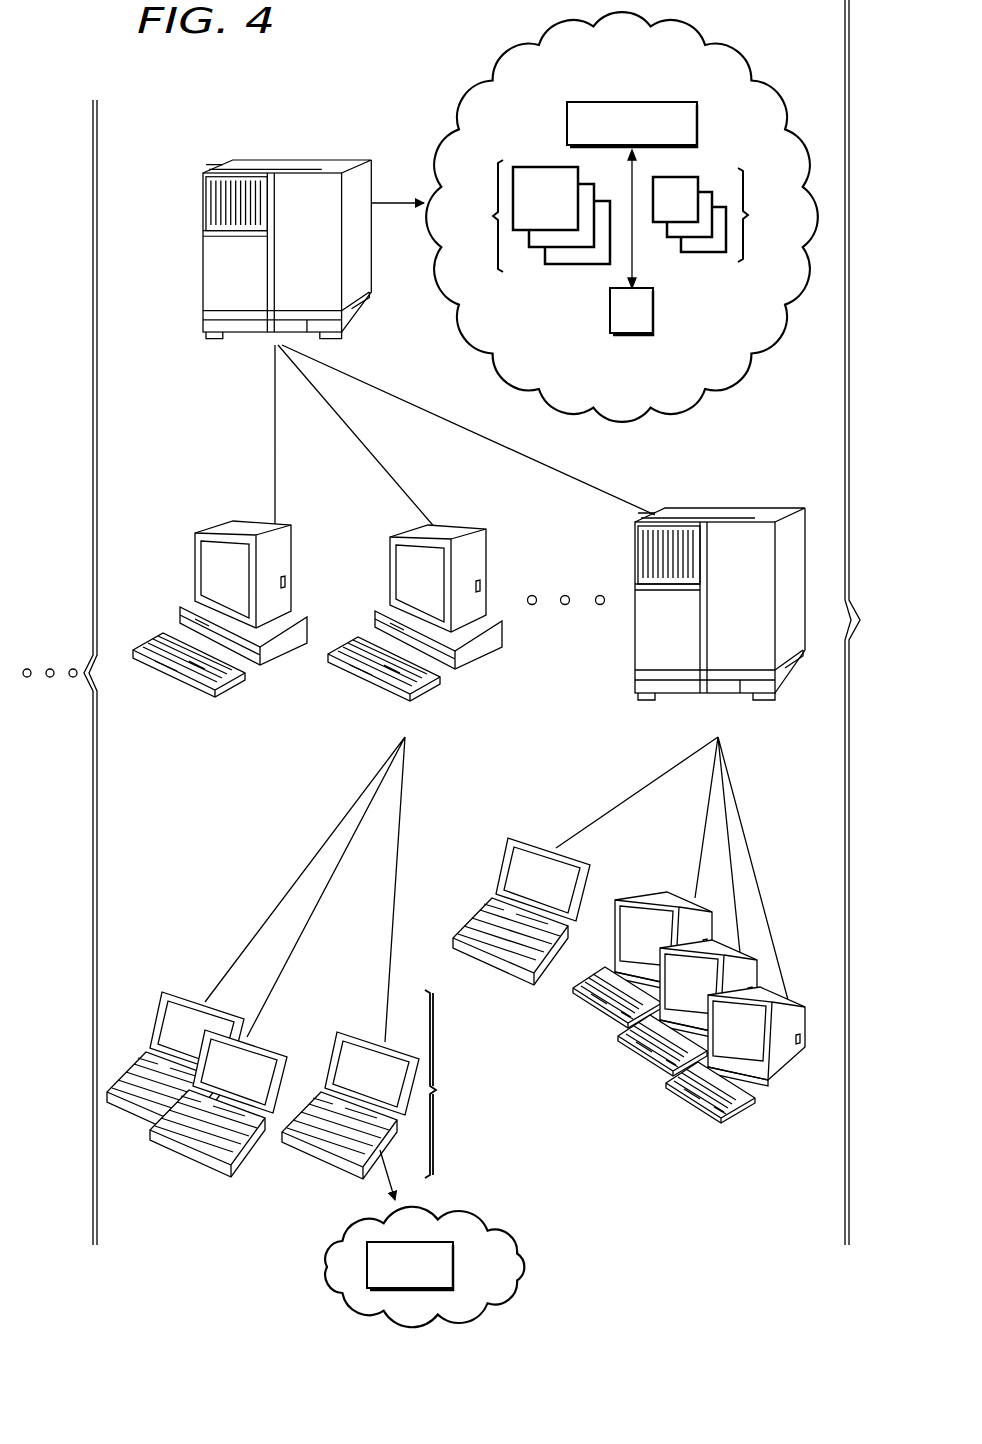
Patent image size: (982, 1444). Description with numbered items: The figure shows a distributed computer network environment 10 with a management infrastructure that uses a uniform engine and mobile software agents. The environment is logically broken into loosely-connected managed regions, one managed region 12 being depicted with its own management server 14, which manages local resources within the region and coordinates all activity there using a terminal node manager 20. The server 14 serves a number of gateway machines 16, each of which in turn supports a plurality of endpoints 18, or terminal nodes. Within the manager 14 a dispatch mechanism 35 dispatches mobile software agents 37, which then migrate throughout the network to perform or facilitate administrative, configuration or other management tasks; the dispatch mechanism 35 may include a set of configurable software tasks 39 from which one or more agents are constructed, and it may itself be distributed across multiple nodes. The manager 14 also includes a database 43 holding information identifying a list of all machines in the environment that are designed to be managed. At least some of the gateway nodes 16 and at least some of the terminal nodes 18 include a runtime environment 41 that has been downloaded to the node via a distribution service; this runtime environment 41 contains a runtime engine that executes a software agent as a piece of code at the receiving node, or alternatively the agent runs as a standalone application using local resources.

The distributed computer environment 10 is at (198, 893).
The managed region 12 is at (865, 320).
The management server 14 is at (201, 284).
The gateway machine 16 is at (195, 562).
The endpoint 18 is at (286, 1110).
The terminal node manager 20 is at (160, 164).
The dispatch mechanism 35 is at (699, 124).
The software agents 37 is at (537, 216).
The configurable software tasks 39 is at (718, 215).
The runtime environment 41 is at (455, 1266).
The database 43 is at (655, 313).